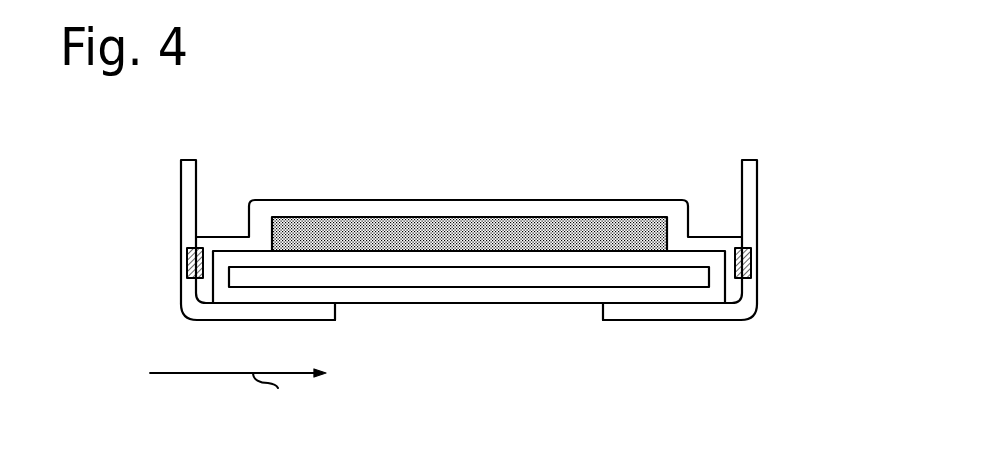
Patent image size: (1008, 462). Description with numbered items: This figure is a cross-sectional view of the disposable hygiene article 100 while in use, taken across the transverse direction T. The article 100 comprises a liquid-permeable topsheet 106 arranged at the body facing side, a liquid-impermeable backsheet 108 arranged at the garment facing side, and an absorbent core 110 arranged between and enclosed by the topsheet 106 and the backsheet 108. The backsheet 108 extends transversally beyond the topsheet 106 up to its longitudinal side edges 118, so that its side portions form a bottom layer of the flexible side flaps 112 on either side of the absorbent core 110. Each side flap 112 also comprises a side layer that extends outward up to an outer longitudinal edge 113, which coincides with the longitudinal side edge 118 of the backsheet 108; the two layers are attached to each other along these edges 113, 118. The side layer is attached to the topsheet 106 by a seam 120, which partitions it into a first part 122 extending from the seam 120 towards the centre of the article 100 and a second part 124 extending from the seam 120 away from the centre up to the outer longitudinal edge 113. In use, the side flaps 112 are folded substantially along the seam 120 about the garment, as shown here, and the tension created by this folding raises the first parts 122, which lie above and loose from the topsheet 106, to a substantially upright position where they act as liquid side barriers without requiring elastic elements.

The disposable hygiene article 100 is at (630, 138).
The liquid-permeable topsheet 106 is at (455, 210).
The liquid-impermeable backsheet 108 is at (478, 262).
The absorbent core 110 is at (508, 230).
The flexible side flaps 112 is at (232, 320).
The outer longitudinal edge 113 is at (335, 312).
The longitudinal side edge 118 is at (335, 290).
The seam 120 is at (187, 262).
The first part 122 is at (187, 180).
The second part 124 is at (187, 293).